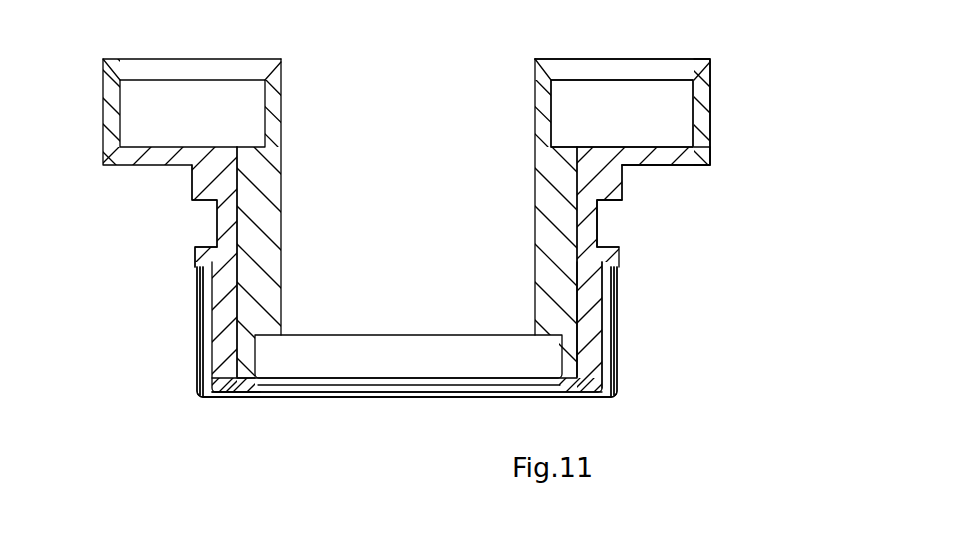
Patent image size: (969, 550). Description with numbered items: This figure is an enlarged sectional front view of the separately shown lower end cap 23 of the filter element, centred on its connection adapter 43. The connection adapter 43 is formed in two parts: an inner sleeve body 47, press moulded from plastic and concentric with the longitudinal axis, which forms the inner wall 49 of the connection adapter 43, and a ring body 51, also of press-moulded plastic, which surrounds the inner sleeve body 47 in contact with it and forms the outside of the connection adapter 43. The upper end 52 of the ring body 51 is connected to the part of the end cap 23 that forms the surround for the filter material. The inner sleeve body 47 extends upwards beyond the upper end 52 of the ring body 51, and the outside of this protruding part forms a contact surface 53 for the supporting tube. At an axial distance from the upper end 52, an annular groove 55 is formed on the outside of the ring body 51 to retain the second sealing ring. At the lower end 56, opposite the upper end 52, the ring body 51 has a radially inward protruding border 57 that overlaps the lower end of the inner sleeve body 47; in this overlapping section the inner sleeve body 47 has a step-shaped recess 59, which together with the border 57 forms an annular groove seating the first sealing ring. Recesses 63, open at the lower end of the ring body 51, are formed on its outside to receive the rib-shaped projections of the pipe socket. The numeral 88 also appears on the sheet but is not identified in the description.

The connection adapter 43 is at (672, 332).
The contact surface 53 is at (553, 102).
The flange outer edge 88 is at (712, 97).
The end cap 23 is at (712, 158).
The inner sleeve body 47 is at (250, 168).
The inner wall 49 is at (212, 248).
The recesses 63 is at (203, 330).
The recess 59 is at (257, 383).
The border 57 is at (287, 396).
The upper end 52 is at (598, 148).
The annular groove 55 is at (600, 237).
The ring body 51 is at (589, 312).
The lower end 56 is at (573, 397).